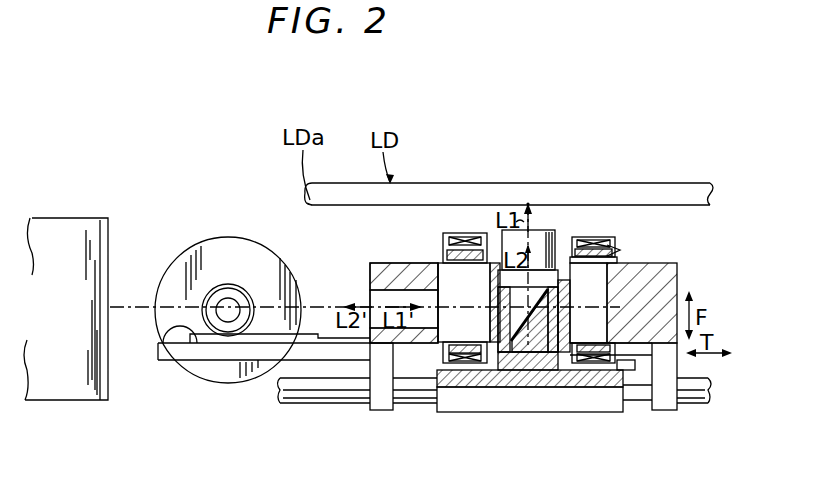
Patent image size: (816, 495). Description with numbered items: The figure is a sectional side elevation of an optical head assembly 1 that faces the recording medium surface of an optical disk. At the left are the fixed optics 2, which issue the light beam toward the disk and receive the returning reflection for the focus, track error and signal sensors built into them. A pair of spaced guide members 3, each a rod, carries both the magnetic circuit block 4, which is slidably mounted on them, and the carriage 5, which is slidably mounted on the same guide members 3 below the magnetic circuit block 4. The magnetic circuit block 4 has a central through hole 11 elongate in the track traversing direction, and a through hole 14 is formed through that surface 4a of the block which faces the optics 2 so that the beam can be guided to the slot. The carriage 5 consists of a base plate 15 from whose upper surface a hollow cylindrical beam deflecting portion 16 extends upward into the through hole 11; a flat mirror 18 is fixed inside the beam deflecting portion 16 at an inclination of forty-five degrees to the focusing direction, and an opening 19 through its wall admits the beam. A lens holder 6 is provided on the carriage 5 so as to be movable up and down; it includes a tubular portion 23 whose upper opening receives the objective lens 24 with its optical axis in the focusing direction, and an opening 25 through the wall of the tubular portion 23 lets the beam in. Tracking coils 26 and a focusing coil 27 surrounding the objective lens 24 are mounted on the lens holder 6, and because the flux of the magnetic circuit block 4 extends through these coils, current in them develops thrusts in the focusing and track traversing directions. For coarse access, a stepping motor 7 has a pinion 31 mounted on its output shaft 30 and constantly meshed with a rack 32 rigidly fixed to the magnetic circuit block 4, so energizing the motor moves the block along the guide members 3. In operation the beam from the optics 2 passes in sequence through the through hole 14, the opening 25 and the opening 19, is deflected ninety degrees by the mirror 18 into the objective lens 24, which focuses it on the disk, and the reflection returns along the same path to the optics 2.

The optical head assembly 1 is at (218, 165).
The optics 2 is at (80, 218).
The guide members 3 is at (700, 406).
The magnetic circuit block 4 is at (680, 266).
The surface of the magnetic circuit block 4a is at (372, 280).
The carriage 5 is at (597, 416).
The lens holder 6 is at (624, 249).
The stepping motor 7 is at (192, 242).
The through hole 11 is at (447, 284).
The through hole 14 is at (372, 298).
The base plate 15 is at (620, 364).
The beam deflecting portion 16 is at (545, 332).
The flat mirror 18 is at (527, 345).
The opening 19 is at (503, 345).
The tubular portion 23 is at (573, 288).
The objective lens 24 is at (543, 230).
The opening 25 is at (493, 322).
The tracking coils 26 is at (612, 246).
The focusing coil 27 is at (579, 238).
The output shaft 30 is at (228, 300).
The pinion 31 is at (243, 289).
The rack 32 is at (180, 340).